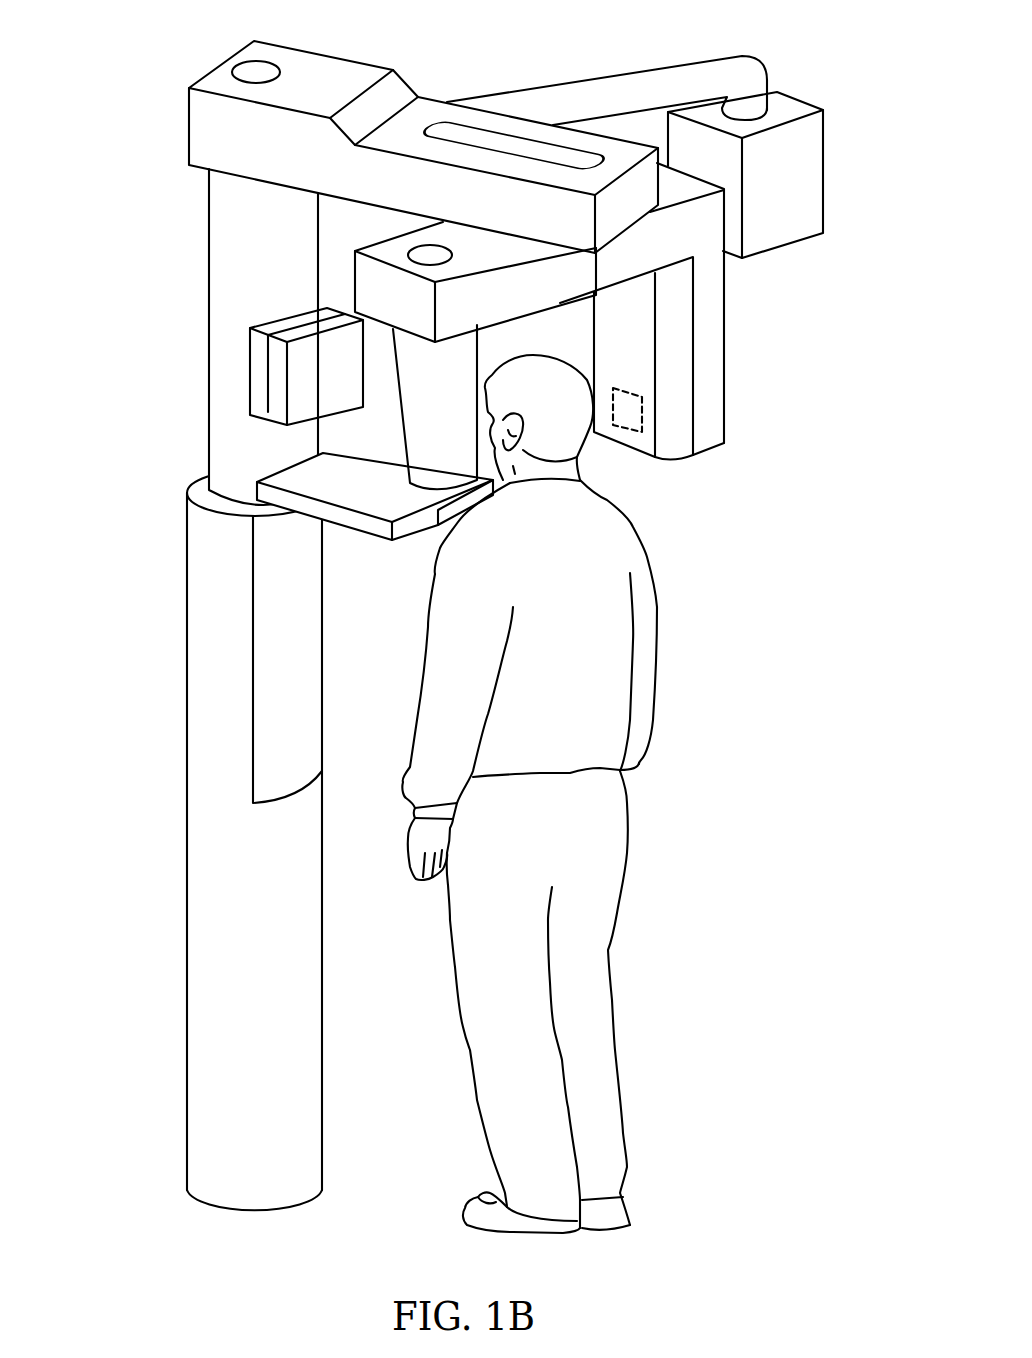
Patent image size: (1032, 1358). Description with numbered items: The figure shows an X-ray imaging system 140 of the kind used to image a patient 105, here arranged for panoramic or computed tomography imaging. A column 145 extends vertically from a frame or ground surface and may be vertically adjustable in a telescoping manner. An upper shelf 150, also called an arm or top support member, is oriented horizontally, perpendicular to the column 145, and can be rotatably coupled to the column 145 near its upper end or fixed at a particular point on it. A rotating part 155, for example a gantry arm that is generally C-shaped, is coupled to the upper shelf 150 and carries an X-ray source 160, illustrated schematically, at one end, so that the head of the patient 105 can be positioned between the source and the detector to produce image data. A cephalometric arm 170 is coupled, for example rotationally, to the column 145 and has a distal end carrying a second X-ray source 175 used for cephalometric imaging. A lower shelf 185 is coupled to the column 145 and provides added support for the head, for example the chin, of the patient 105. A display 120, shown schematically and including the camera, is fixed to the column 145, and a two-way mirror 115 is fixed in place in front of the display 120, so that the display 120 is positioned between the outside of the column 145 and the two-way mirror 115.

The patient 105 is at (600, 912).
The two-way mirror 115 is at (272, 412).
The display 120 is at (257, 367).
The X-ray imaging system 140 is at (126, 34).
The column 145 is at (210, 852).
The upper shelf 150 is at (313, 65).
The rotating part 155 is at (367, 280).
The X-ray source 160 is at (643, 418).
The cephalometric arm 170 is at (618, 91).
The second X-ray source 175 is at (812, 171).
The lower shelf 185 is at (410, 527).